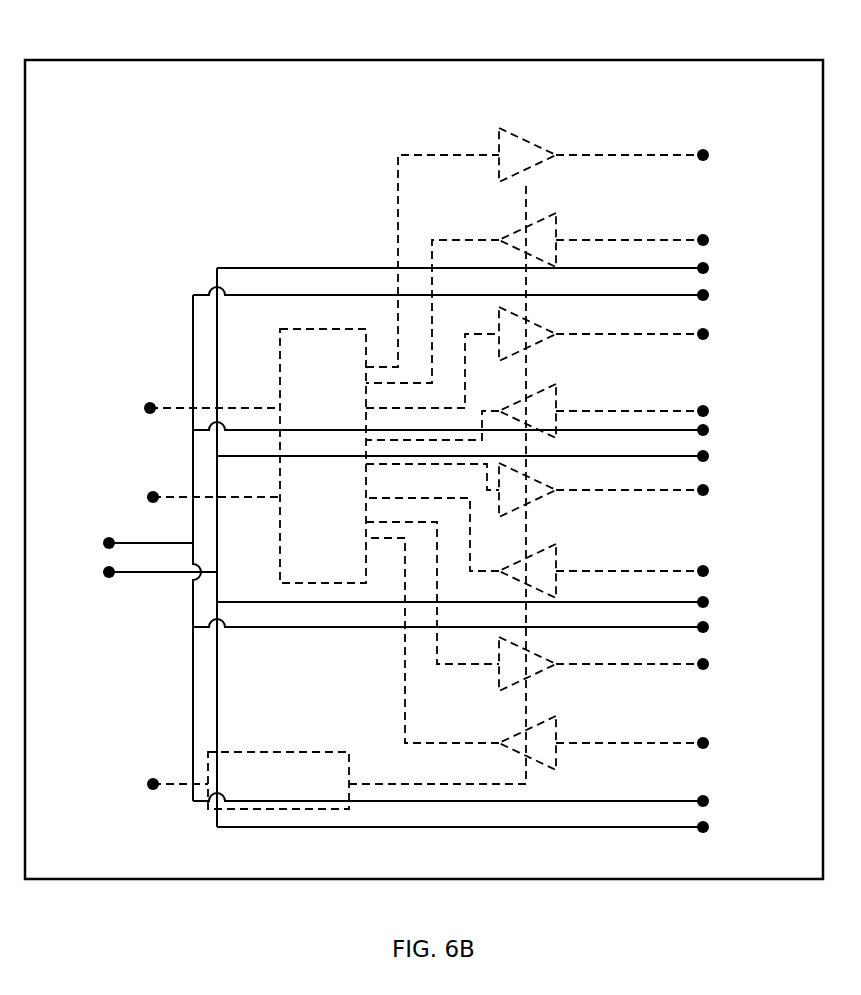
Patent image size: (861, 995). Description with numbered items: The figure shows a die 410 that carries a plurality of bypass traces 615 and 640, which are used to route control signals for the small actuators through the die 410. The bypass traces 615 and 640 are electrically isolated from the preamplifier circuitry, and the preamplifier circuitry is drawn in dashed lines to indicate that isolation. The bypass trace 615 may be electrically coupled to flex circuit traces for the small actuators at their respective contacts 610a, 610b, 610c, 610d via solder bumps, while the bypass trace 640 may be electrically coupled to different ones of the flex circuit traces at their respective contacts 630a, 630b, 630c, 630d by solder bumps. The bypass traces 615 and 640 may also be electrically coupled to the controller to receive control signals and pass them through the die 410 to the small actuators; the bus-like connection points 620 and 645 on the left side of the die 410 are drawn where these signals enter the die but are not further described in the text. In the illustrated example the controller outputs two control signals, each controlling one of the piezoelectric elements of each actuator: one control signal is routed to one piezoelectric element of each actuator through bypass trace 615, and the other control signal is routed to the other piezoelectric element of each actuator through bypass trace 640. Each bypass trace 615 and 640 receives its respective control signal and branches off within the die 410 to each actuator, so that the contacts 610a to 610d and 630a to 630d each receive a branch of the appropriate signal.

The die 410 is at (676, 60).
The contact 610a is at (710, 268).
The contact 630a is at (710, 295).
The contact 630b is at (710, 430).
The contact 610b is at (710, 456).
The contact 610c is at (710, 602).
The contact 630c is at (710, 627).
The contact 630d is at (710, 801).
The contact 610d is at (710, 827).
The bypass trace 615 is at (258, 297).
The common bus input 620 is at (110, 582).
The bypass trace 640 is at (275, 830).
The control input 645 is at (114, 532).